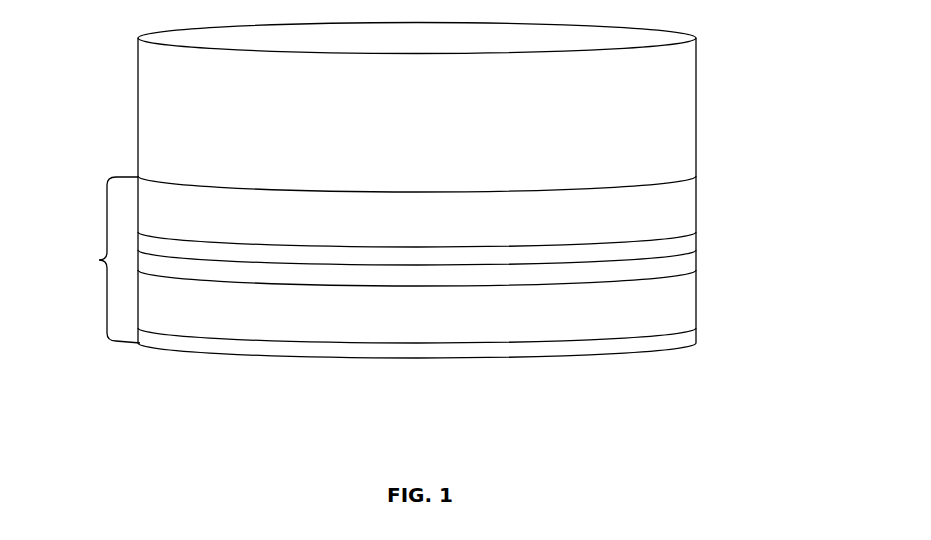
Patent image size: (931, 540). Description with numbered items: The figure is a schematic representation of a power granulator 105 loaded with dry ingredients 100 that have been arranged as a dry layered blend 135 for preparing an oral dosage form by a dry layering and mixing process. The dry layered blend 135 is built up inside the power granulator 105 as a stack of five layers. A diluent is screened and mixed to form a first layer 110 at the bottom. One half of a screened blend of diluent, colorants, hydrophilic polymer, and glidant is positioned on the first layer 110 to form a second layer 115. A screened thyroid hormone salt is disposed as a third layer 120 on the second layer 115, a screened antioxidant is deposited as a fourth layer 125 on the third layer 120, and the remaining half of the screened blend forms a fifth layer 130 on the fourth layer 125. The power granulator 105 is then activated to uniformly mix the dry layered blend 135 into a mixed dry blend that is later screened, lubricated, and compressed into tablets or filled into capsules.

The dry ingredients 100 is at (701, 75).
The power granulator 105 is at (697, 128).
The first layer 110 is at (688, 335).
The second layer 115 is at (685, 315).
The third layer 120 is at (673, 267).
The fourth layer 125 is at (682, 247).
The fifth layer 130 is at (686, 215).
The dry layered blend 135 is at (98, 260).